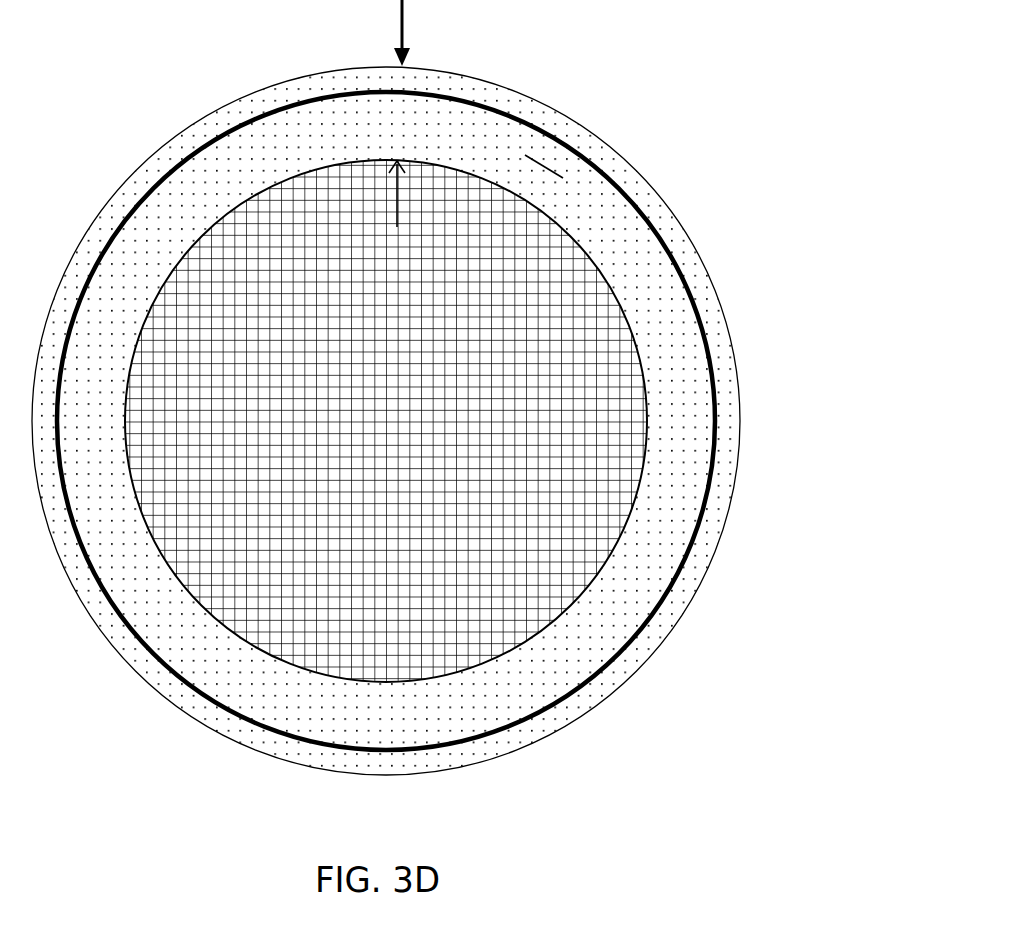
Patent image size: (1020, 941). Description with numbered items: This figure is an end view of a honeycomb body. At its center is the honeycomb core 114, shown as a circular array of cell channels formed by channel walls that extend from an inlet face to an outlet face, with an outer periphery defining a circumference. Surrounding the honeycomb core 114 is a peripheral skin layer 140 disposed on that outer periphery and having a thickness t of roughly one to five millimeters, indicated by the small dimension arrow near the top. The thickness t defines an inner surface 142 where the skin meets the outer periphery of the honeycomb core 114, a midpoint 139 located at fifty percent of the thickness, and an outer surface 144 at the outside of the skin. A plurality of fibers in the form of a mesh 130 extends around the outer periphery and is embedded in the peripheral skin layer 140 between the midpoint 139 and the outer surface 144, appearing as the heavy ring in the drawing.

The honeycomb core 114 is at (622, 486).
The mesh 130 is at (683, 274).
The midpoint 139 is at (548, 170).
The peripheral skin layer 140 is at (622, 242).
The inner surface 142 is at (650, 442).
The outer surface 144 is at (563, 112).